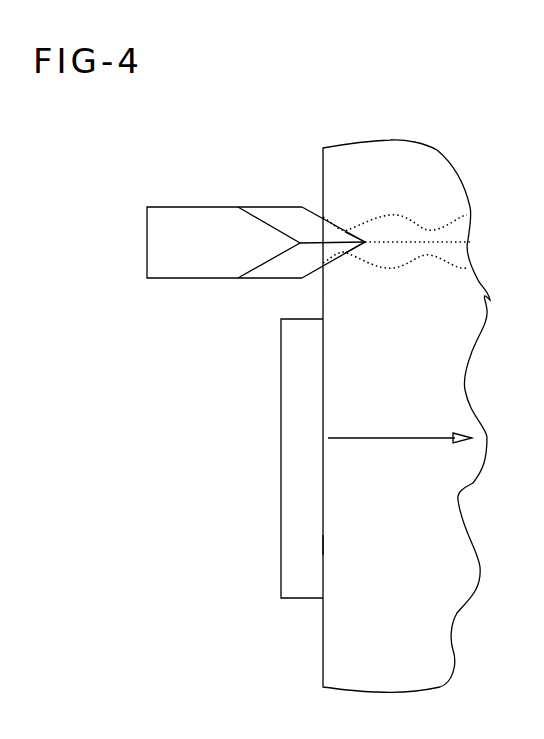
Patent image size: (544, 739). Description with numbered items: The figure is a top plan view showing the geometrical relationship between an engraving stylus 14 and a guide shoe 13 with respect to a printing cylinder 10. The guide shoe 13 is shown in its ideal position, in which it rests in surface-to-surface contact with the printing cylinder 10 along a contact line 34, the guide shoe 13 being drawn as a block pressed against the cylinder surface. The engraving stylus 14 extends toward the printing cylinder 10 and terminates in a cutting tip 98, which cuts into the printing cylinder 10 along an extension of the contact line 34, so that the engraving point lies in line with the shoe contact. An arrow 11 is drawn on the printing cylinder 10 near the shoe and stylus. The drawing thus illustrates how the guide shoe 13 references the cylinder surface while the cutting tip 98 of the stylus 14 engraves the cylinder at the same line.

The printing cylinder 10 is at (435, 539).
The feed direction 11 is at (398, 438).
The guide shoe 13 is at (297, 470).
The engraving stylus 14 is at (208, 222).
The contact line 34 is at (323, 545).
The cutting tip 98 is at (355, 230).